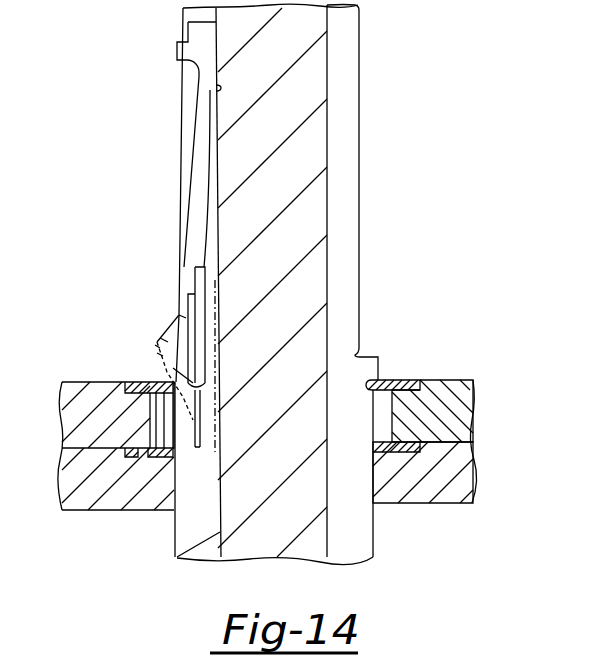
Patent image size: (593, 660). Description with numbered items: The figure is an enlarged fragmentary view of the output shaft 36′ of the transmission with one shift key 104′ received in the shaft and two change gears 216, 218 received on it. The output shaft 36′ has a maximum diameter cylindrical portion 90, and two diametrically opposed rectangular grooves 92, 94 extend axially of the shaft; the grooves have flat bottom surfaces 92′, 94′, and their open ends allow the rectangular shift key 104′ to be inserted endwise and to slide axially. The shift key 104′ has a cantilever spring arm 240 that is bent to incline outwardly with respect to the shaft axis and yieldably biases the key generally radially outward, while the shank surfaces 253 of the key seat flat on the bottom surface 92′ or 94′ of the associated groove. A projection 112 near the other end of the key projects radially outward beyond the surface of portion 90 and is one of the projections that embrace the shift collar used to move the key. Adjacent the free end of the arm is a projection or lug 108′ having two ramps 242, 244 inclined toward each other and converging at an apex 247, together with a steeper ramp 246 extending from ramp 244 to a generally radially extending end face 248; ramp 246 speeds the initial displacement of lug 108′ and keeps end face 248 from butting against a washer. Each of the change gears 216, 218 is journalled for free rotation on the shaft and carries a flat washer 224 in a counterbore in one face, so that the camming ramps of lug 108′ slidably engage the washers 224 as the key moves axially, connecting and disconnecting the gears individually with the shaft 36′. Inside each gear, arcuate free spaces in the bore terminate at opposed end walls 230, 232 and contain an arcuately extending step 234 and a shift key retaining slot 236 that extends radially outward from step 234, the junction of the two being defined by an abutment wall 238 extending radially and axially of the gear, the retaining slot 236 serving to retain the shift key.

The rectangular groove 94 is at (352, 65).
The flat bottom surface 94′ is at (328, 113).
The maximum diameter cylindrical portion 90 is at (362, 270).
The output shaft 36′ is at (364, 181).
The rectangular groove 92 is at (185, 116).
The projection 112 is at (177, 51).
The shank surfaces 253 is at (215, 88).
The cantilever spring arm 240 is at (192, 178).
The ramp 246 is at (200, 312).
The end face 248 is at (217, 362).
The shift key 104′ is at (165, 274).
The ramp 242 is at (167, 333).
The projection or lug 108′ is at (160, 338).
The apex 247 is at (155, 345).
The ramp 244 is at (157, 353).
The end wall 232 is at (155, 462).
The abutment wall 238 is at (105, 467).
The step 234 is at (168, 422).
The flat bottom surface 92′ is at (177, 558).
The shift key retaining slot 236 is at (381, 421).
The end wall 230 is at (378, 395).
The flat washer 224 is at (400, 378).
The speed change spur gear 218 is at (460, 374).
The speed change spur gear 216 is at (445, 504).